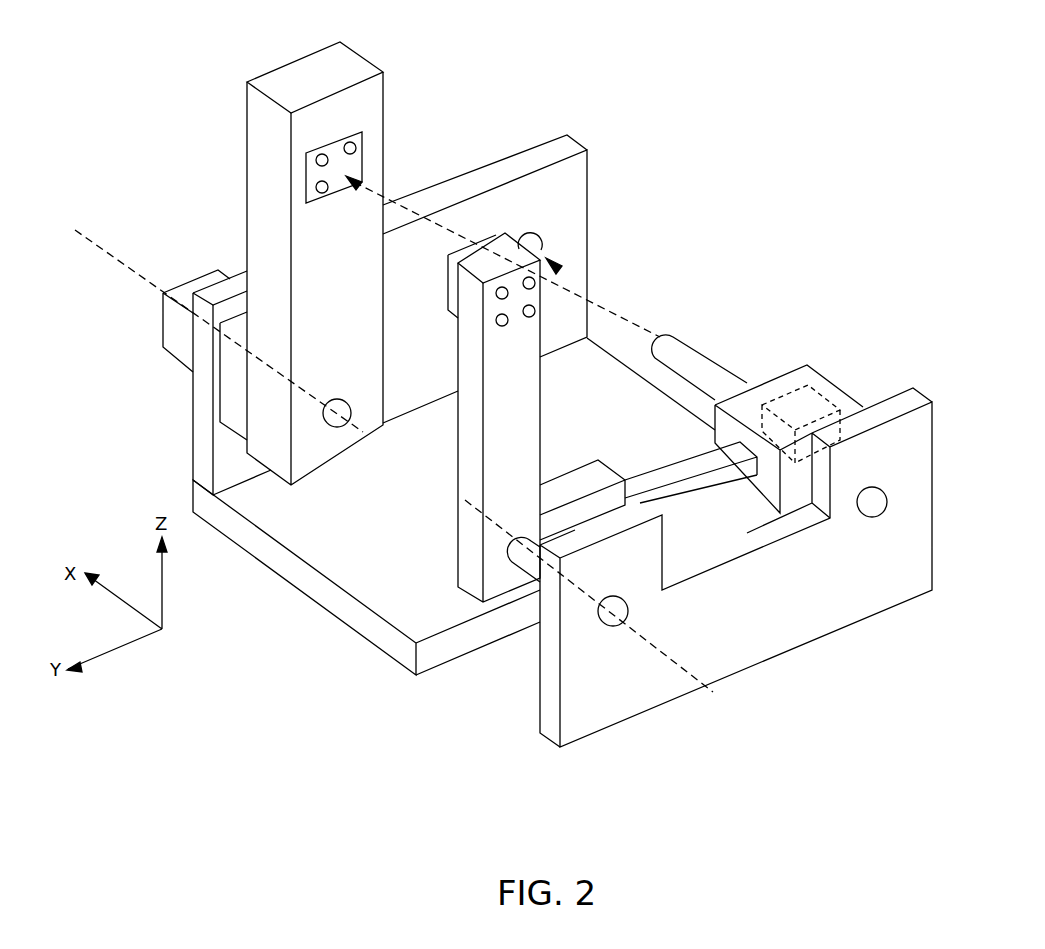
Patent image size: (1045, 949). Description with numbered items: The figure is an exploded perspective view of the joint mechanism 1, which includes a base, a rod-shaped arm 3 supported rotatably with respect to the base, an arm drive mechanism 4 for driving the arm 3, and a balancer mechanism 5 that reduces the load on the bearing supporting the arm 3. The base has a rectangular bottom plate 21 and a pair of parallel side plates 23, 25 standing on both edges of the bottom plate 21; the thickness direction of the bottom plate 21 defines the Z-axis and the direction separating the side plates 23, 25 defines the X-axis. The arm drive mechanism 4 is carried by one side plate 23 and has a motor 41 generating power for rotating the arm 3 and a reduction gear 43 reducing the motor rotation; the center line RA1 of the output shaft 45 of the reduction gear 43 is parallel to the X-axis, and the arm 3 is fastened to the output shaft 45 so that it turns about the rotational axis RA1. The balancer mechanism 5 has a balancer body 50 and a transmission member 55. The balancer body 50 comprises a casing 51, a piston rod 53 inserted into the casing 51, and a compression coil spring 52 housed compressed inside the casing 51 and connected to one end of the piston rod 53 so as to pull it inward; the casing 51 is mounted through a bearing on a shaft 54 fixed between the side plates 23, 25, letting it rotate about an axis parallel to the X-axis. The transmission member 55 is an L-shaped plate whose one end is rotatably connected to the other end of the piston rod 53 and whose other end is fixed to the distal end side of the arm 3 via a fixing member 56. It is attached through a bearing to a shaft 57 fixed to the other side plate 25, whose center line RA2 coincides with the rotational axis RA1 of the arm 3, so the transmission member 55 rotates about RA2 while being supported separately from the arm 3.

The joint mechanism 1 is at (731, 185).
The rod-shaped arm 3 is at (420, 250).
The arm drive mechanism 4 is at (137, 355).
The balancer mechanism 5 is at (633, 416).
The bottom plate 21 is at (303, 575).
The side plate 23 is at (203, 433).
The side plate 25 is at (548, 697).
The motor 41 is at (183, 327).
The reduction gear 43 is at (237, 398).
The output shaft 45 is at (337, 399).
The balancer body 50 is at (848, 389).
The casing 51 is at (806, 364).
The compression coil spring 52 is at (793, 407).
The piston rod 53 is at (687, 490).
The shaft 54 is at (693, 347).
The transmission member 55 is at (500, 262).
The fixing member 56 is at (482, 248).
The shaft 57 is at (537, 575).
The rotational axis RA1 is at (203, 315).
The rotational axis RA2 is at (606, 612).